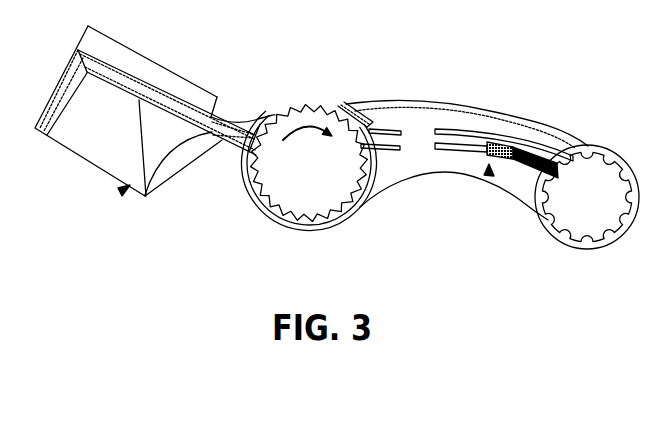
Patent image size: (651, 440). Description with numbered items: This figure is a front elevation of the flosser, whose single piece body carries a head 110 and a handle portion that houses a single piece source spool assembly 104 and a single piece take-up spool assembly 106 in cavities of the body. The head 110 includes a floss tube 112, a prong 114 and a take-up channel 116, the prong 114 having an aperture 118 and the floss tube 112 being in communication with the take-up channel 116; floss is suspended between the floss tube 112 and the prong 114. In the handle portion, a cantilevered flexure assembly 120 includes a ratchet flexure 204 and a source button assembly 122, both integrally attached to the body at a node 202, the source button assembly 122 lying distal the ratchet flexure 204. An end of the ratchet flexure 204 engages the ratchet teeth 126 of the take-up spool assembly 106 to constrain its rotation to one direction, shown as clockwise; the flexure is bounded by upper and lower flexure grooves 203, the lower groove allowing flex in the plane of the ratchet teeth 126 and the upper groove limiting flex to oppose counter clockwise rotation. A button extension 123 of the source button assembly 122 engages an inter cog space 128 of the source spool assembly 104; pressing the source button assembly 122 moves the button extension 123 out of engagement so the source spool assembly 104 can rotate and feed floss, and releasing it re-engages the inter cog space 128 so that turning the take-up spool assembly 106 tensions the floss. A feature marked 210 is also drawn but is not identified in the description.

The drive wheel 104 is at (588, 214).
The saw blade 106 is at (313, 183).
The cover 110 is at (150, 62).
The housing 112 is at (23, 118).
The chute wall 114 is at (145, 197).
The guide rail 116 is at (113, 91).
The outlet 118 is at (120, 190).
The feed direction 120 is at (488, 177).
The channel 122 is at (507, 133).
The cutting zone 123 is at (538, 174).
The feed opening 126 is at (290, 110).
The gear teeth 128 is at (583, 182).
The arm 202 is at (416, 130).
The guide plates 203 is at (384, 130).
The blade guard 204 is at (361, 136).
The slot 210 is at (453, 135).